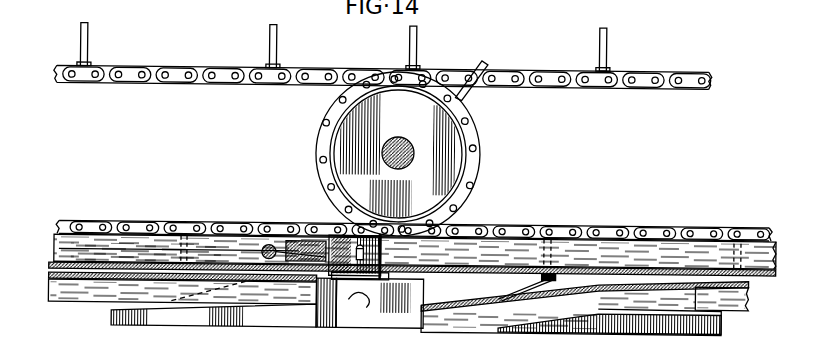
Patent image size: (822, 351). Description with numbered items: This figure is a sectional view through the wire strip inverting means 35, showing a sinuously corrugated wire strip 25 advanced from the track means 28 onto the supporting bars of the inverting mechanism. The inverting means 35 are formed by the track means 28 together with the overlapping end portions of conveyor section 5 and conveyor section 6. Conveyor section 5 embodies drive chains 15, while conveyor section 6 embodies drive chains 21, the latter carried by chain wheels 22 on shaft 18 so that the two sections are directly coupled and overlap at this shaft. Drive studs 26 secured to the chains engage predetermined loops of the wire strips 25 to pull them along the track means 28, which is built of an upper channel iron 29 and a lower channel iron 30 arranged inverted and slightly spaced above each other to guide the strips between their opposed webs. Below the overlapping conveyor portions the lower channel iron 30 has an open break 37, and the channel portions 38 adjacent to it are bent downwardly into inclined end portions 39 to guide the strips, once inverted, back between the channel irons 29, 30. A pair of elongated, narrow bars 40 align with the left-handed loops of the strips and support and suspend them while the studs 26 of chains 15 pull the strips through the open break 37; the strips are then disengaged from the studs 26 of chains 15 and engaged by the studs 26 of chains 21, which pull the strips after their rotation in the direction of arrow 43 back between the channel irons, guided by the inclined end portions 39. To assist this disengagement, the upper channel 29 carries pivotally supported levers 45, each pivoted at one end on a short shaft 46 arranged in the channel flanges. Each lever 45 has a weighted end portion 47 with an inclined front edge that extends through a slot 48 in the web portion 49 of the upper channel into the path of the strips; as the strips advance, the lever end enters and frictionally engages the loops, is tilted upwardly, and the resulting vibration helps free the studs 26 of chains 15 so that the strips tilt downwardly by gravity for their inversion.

The conveyor section 5 is at (221, 89).
The conveyor section 6 is at (556, 100).
The drive chains 15 is at (155, 67).
The shaft 18 is at (407, 134).
The drive chains 21 is at (645, 227).
The chain wheels 22 is at (458, 164).
The wire strips 25 is at (160, 264).
The drive studs 26 is at (276, 50).
The track means 28 is at (43, 268).
The upper channel iron 29 is at (206, 257).
The lower channel iron 30 is at (92, 298).
The wire strip inverting means 35 is at (393, 285).
The open breaks 37 is at (320, 310).
The channel portions 38 is at (737, 307).
The inclined end portions 39 is at (620, 310).
The elongated bars 40 is at (243, 320).
The arrow 43 is at (418, 292).
The levers 45 is at (362, 243).
The short shafts 46 is at (283, 241).
The weighted end portions 47 is at (378, 258).
The slots 48 is at (315, 242).
The web portions 49 is at (110, 260).